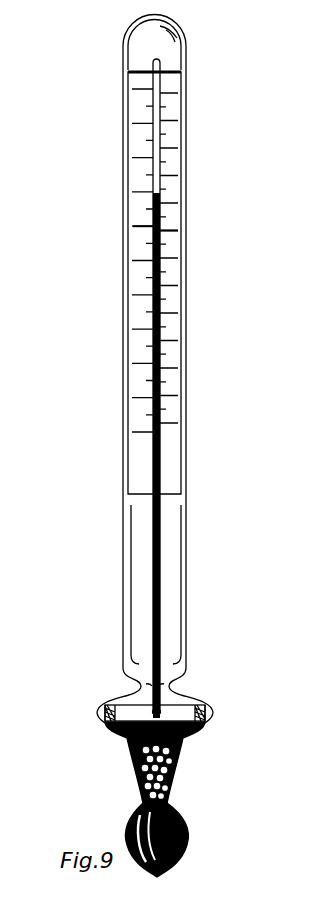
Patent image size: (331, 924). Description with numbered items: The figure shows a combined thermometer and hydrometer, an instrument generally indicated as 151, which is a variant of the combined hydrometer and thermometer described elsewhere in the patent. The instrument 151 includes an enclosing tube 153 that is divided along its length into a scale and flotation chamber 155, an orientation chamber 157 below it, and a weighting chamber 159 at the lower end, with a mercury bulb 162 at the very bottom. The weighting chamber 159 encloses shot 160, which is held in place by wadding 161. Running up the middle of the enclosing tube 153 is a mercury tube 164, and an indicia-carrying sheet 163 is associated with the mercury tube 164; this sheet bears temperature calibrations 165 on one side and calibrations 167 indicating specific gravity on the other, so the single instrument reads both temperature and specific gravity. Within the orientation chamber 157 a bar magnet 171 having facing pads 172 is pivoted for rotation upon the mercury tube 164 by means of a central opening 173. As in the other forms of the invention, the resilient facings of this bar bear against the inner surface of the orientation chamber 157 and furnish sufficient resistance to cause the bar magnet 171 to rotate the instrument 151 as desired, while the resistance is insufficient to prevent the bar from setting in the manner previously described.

The instrument 151 is at (112, 55).
The enclosing tube 153 is at (186, 55).
The scale and flotation chamber 155 is at (186, 112).
The orientation chamber 157 is at (185, 700).
The weighting chamber 159 is at (174, 782).
The shot 160 is at (134, 765).
The wadding 161 is at (186, 742).
The mercury bulb 162 is at (125, 822).
The indicia-carrying sheet 163 is at (178, 185).
The mercury tube 164 is at (140, 166).
The temperature calibrations 165 is at (143, 233).
The calibrations 167 is at (170, 234).
The bar magnet 171 is at (198, 705).
The facing pads 172 is at (103, 712).
The central opening 173 is at (130, 700).